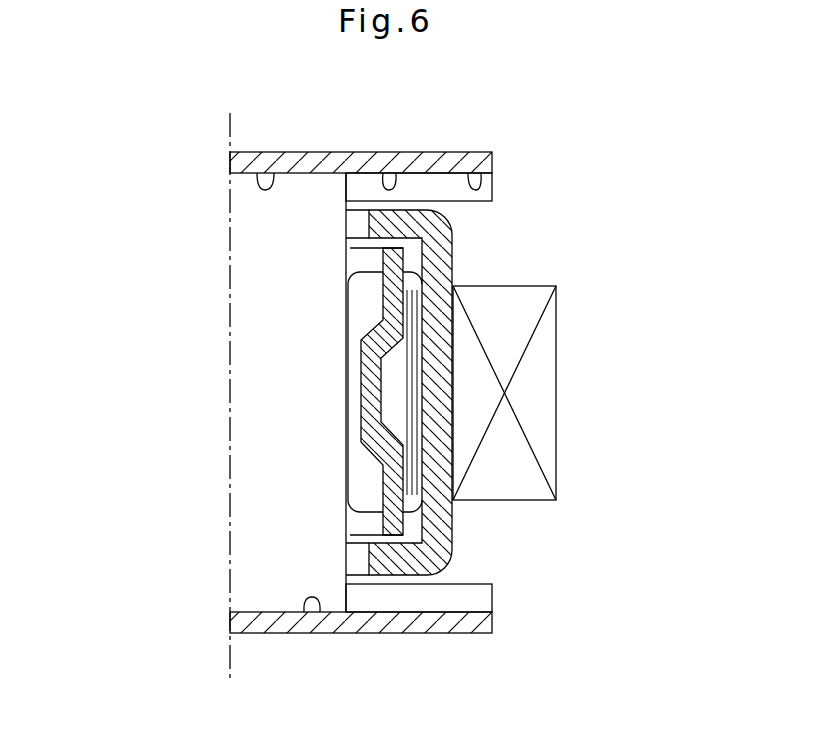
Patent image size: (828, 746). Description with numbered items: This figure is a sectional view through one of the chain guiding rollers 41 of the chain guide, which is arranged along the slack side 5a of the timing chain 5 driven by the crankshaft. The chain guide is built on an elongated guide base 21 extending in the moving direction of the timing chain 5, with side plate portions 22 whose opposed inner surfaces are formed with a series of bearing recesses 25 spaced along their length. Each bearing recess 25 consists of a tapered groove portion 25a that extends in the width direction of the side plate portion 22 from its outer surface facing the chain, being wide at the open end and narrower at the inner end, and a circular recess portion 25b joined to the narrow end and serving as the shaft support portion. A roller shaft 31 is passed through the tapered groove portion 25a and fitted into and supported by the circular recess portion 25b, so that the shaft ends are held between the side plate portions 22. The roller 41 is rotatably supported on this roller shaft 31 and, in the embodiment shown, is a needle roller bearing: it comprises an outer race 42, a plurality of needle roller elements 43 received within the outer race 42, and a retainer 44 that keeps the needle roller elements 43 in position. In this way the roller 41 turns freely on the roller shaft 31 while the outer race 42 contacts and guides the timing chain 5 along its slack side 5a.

The timing chain 5 is at (556, 300).
The slack side 5a is at (542, 388).
The guide base 21 is at (233, 161).
The side plate portion 22 is at (425, 162).
The bearing recess 25 is at (481, 173).
The tapered groove portion 25a is at (396, 173).
The circular recess portion 25b is at (274, 173).
The roller shaft 31 is at (257, 500).
The chain guiding roller 41 is at (458, 232).
The outer race 42 is at (442, 456).
The needle roller element 43 is at (357, 323).
The retainer 44 is at (393, 312).